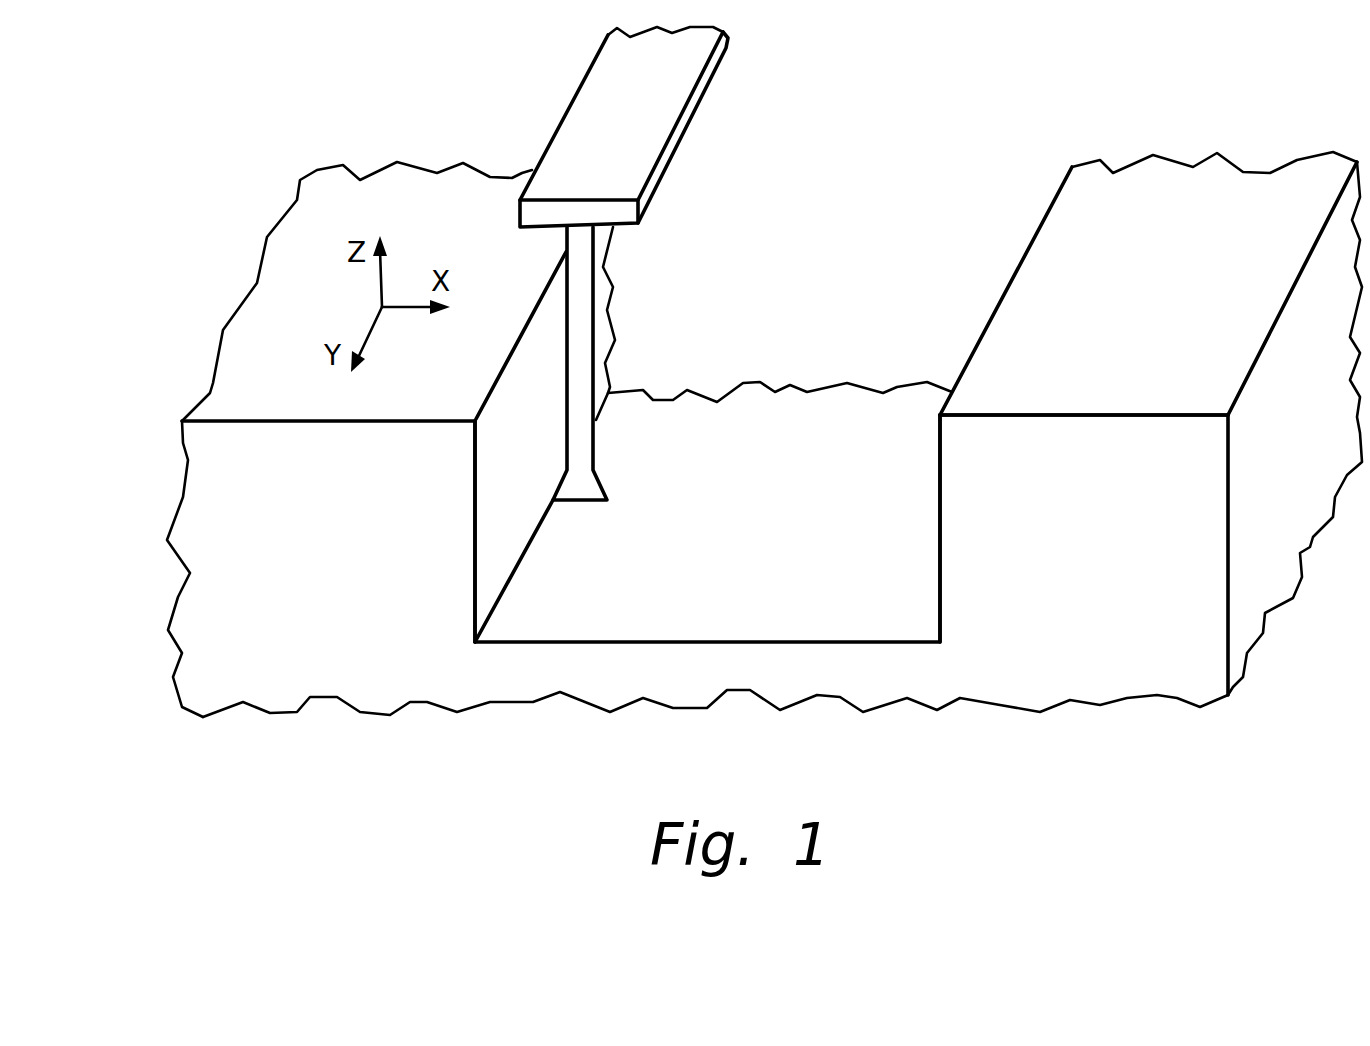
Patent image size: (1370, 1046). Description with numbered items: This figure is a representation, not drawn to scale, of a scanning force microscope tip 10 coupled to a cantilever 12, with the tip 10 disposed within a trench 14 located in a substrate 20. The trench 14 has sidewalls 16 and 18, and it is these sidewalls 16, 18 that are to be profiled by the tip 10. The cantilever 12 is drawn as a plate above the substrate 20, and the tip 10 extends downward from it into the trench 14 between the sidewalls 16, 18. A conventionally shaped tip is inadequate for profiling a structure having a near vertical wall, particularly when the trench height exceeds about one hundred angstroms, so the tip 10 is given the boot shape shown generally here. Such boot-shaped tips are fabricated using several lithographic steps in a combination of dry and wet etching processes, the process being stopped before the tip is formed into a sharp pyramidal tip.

The tip 10 is at (580, 355).
The cantilever 12 is at (662, 115).
The trench 14 is at (935, 347).
The sidewall 16 is at (475, 570).
The sidewall 18 is at (940, 568).
The substrate 20 is at (1127, 413).